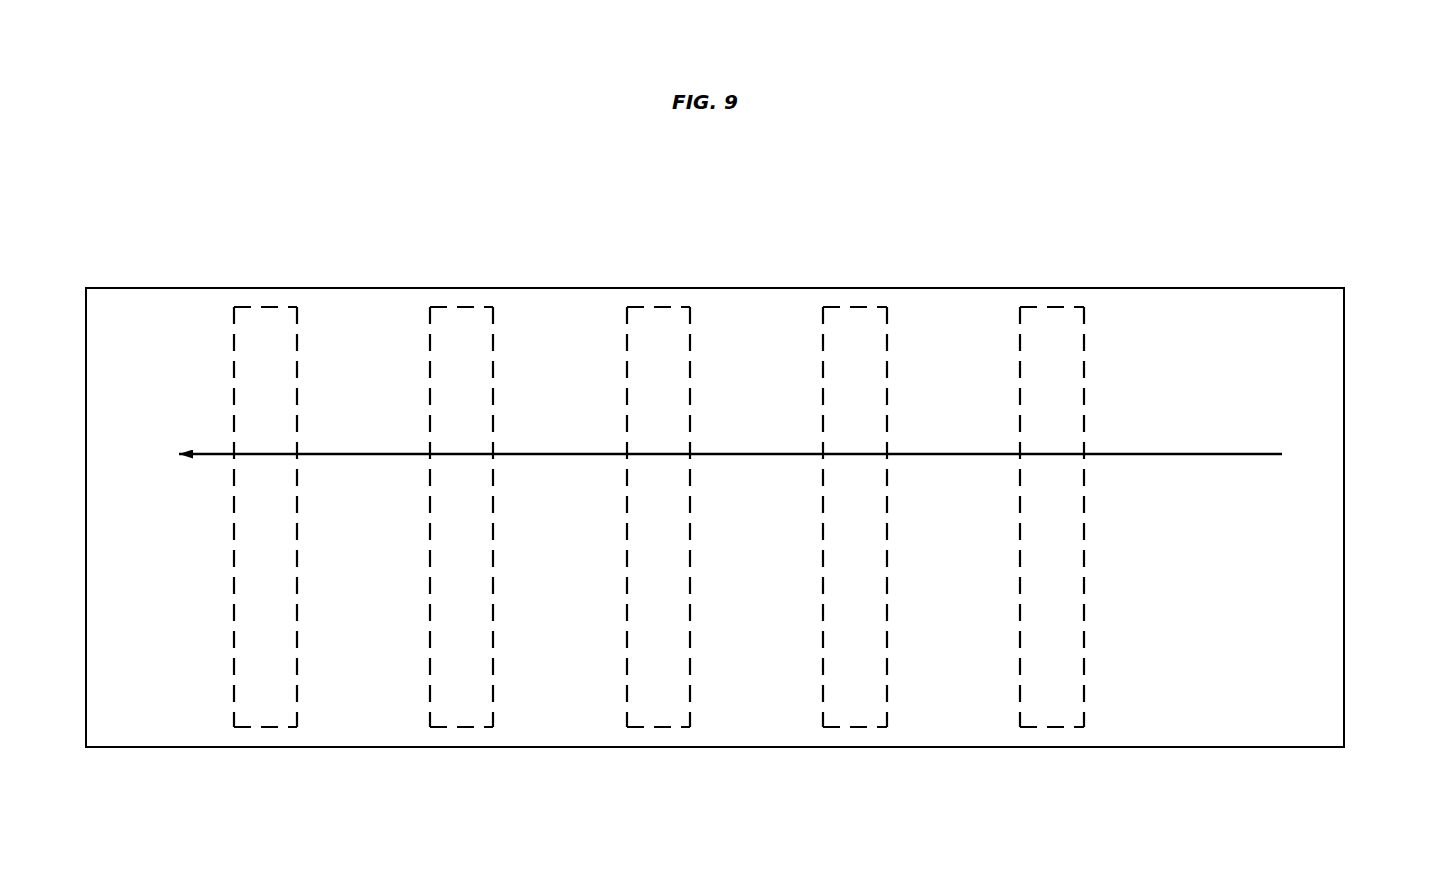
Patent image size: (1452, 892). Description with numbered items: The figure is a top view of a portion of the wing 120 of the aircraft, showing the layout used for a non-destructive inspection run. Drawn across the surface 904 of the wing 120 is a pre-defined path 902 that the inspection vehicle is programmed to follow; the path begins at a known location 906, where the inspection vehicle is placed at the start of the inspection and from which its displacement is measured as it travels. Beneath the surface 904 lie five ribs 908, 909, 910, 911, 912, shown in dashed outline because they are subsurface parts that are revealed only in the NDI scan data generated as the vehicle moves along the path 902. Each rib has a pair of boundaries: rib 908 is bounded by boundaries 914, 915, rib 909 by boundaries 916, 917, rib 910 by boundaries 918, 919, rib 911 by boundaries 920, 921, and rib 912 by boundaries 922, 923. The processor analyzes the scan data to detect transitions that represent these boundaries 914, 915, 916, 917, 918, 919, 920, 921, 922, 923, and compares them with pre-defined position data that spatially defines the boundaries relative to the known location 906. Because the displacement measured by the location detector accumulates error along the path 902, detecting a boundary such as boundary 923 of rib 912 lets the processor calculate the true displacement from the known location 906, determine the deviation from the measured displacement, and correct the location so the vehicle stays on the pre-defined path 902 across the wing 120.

The wing 120 is at (890, 213).
The pre-defined path 902 is at (1198, 454).
The surface 904 is at (1320, 558).
The known location 906 is at (1290, 440).
The rib 908 is at (265, 548).
The rib 909 is at (460, 548).
The rib 910 is at (658, 548).
The rib 911 is at (855, 548).
The rib 912 is at (1054, 548).
The boundary 914 is at (233, 643).
The boundary 915 is at (298, 612).
The boundary 916 is at (429, 536).
The boundary 917 is at (494, 505).
The boundary 918 is at (626, 643).
The boundary 919 is at (691, 612).
The boundary 920 is at (822, 536).
The boundary 921 is at (888, 505).
The boundary 922 is at (1019, 643).
The boundary 923 is at (1085, 612).